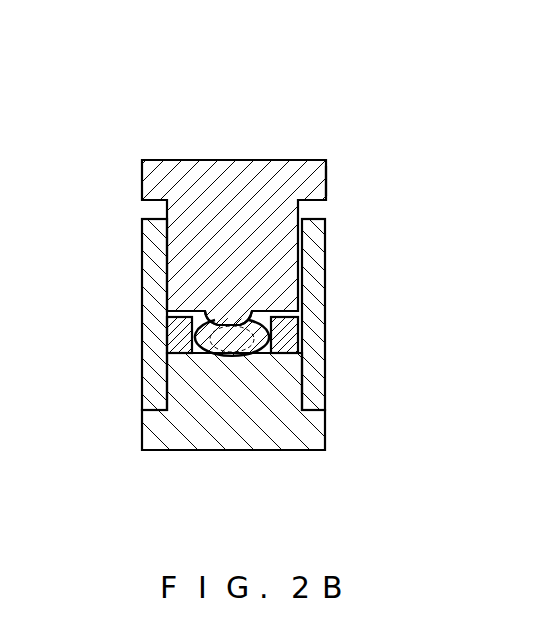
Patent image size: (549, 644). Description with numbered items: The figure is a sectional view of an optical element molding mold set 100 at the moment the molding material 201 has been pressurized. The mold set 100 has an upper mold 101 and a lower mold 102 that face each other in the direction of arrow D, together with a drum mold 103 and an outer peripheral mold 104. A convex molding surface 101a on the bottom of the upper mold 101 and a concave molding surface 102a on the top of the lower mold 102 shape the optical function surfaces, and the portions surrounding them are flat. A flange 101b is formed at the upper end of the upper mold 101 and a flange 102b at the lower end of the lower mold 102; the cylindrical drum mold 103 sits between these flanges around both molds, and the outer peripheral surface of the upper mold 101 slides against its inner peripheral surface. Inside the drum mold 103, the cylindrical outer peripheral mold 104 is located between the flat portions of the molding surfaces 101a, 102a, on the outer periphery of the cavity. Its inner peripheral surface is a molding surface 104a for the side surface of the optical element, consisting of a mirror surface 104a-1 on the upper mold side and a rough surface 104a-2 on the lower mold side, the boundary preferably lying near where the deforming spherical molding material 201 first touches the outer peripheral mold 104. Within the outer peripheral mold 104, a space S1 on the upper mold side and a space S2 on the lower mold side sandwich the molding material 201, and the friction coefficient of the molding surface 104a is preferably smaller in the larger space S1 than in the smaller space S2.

The mold set 100 is at (208, 289).
The upper mold 101 is at (258, 212).
The molding surface 101a is at (300, 315).
The flange 101b is at (370, 181).
The lower mold 102 is at (274, 371).
The molding surface 102a is at (248, 358).
The flange 102b is at (274, 339).
The drum mold 103 is at (318, 335).
The outer peripheral mold 104 is at (170, 345).
The molding surface 104a is at (135, 325).
The mirror surface 104a-1 is at (200, 313).
The rough surface 104a-2 is at (159, 339).
The molding material 201 is at (203, 313).
The arrow D is at (352, 195).
The space S1 is at (293, 301).
The space S2 is at (302, 357).